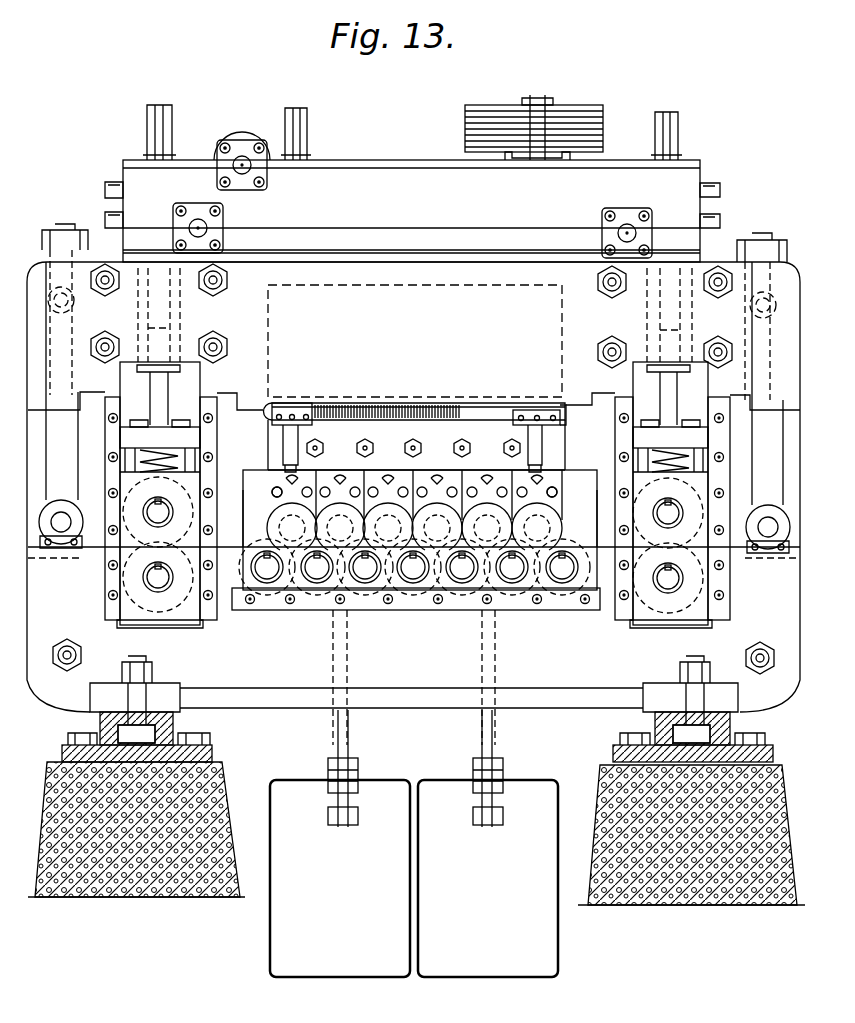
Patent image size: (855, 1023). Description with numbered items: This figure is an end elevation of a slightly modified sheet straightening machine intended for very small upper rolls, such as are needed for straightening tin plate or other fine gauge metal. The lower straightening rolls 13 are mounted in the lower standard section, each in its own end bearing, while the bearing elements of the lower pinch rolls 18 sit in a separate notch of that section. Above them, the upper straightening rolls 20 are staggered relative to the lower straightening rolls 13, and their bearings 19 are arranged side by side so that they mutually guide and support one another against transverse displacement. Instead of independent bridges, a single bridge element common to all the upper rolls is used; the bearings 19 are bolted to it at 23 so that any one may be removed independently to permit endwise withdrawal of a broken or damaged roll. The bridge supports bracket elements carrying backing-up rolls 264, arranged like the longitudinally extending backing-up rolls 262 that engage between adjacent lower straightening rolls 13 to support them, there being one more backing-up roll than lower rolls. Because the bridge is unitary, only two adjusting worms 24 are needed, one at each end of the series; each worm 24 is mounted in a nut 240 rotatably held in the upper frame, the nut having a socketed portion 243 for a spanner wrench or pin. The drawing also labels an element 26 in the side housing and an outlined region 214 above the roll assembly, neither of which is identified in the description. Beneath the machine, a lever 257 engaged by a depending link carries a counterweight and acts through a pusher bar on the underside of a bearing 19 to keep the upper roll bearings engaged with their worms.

The lower straightening rolls 13 is at (320, 578).
The lower pinch rolls 18 is at (150, 580).
The bearings of the upper straightening rolls 19 is at (355, 490).
The upper straightening rolls 20 is at (415, 551).
The bolts 23 is at (277, 494).
The adjusting worm 24 is at (545, 438).
The upper roll in side bearing housing 26 is at (145, 516).
The cover plate 214 is at (562, 340).
The nut 240 is at (503, 410).
The socketed portion 243 is at (293, 415).
The lever 257 is at (348, 742).
The backing-up rolls 262 is at (272, 612).
The backing-up rolls 264 is at (262, 486).